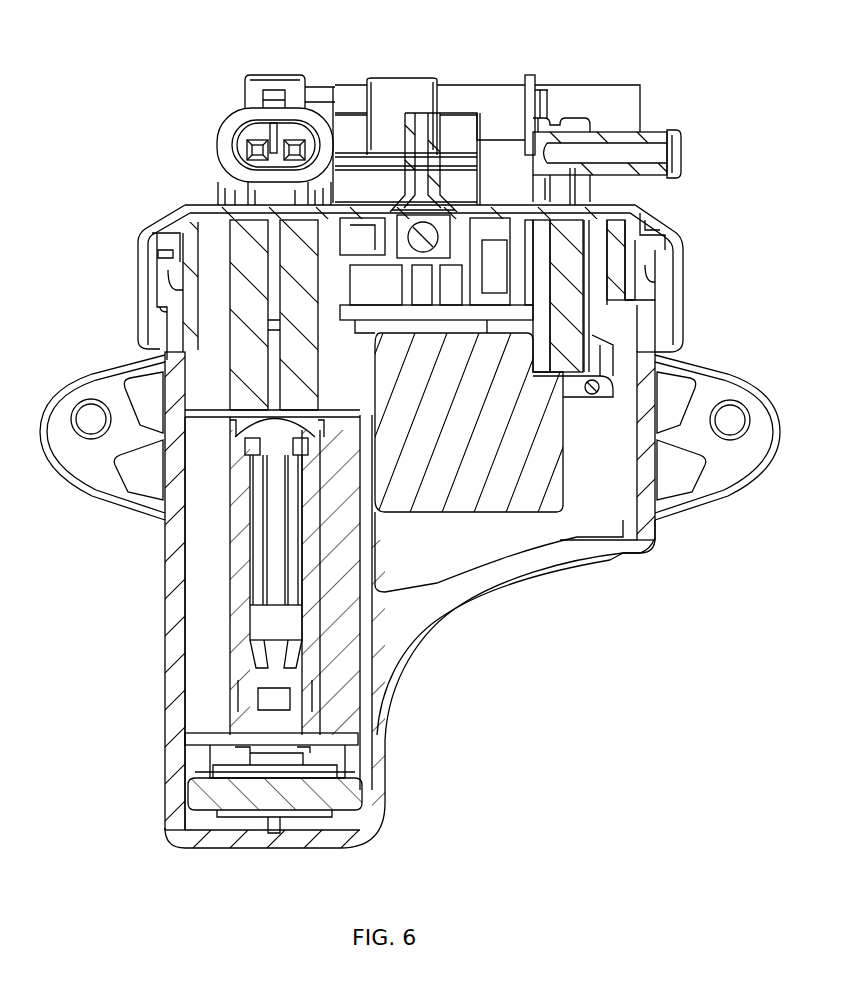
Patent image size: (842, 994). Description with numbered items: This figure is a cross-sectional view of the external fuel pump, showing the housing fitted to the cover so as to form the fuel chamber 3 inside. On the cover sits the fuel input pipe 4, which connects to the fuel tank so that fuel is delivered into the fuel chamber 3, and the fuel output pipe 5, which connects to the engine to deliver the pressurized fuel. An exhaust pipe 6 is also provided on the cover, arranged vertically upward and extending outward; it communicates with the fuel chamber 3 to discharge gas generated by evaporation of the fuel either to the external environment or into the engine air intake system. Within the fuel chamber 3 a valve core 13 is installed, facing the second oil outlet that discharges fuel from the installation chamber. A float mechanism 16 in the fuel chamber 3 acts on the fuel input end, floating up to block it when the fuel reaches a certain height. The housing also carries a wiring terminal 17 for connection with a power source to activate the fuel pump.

The fuel chamber 3 is at (428, 565).
The fuel input pipe 4 is at (623, 152).
The fuel output pipe 5 is at (490, 100).
The exhaust pipe 6 is at (428, 143).
The valve core 13 is at (242, 537).
The float mechanism 16 is at (522, 462).
The wiring terminal 17 is at (235, 143).